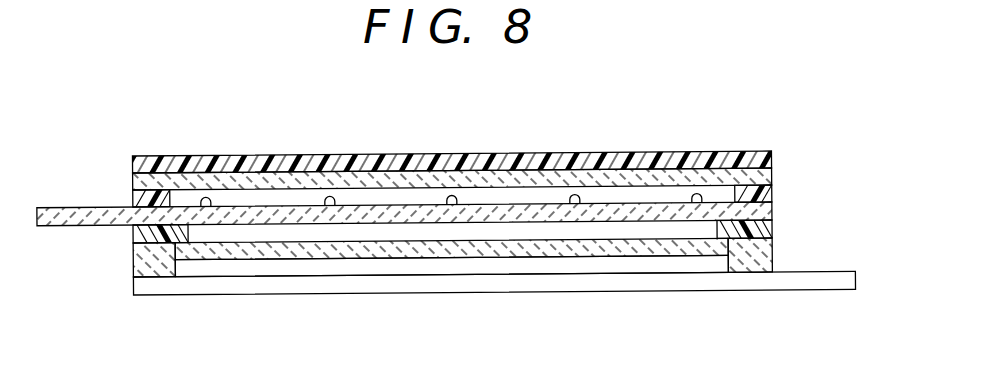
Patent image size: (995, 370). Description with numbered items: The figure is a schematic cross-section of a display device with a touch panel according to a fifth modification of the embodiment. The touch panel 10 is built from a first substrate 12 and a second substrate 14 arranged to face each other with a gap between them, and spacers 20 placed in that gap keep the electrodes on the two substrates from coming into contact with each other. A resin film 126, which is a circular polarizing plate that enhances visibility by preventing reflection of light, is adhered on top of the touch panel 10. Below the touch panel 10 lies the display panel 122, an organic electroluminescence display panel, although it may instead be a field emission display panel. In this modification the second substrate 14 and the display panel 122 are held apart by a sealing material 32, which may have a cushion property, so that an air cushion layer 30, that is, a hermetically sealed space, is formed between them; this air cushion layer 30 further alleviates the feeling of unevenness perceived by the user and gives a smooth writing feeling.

The touch panel 10 is at (431, 216).
The first substrate 12 is at (513, 181).
The second substrate 14 is at (507, 216).
The spacers 20 is at (334, 196).
The air cushion layer 30 is at (386, 233).
The sealing material 32 is at (133, 231).
The display panel 122 is at (808, 289).
The resin film 126 is at (615, 160).